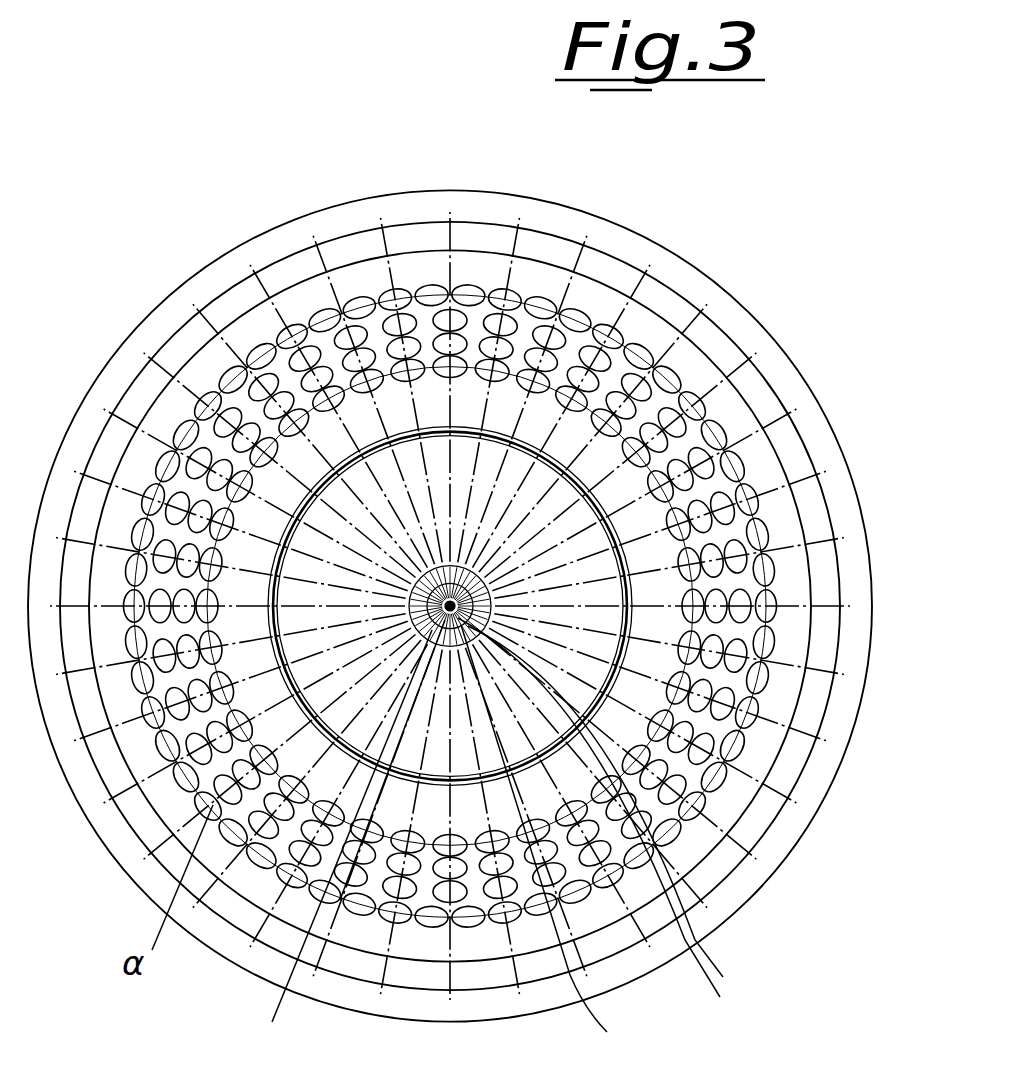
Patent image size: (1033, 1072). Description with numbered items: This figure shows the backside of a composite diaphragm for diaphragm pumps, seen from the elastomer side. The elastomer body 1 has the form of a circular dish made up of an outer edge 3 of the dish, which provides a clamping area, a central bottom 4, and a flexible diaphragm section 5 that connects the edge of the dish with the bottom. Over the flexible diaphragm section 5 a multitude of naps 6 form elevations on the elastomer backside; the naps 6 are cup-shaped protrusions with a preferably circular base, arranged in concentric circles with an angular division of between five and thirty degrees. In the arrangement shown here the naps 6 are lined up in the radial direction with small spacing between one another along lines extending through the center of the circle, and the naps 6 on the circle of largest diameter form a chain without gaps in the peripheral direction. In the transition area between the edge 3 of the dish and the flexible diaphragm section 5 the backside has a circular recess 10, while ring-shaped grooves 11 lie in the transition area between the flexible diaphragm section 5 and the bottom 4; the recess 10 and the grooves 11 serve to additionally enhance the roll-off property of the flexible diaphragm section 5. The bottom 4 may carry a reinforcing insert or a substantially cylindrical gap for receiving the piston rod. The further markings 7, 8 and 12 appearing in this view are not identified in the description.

The elastomer body 1 is at (384, 655).
The edge of the dish 3 is at (220, 273).
The bottom 4 is at (586, 609).
The flexible diaphragm section 5 is at (663, 333).
The naps 6 is at (714, 436).
The radial slot 7 is at (343, 842).
The radial line 8 is at (549, 842).
The circular recess 10 is at (772, 790).
The ring-shaped grooves 11 is at (611, 812).
The plate 12 is at (150, 306).